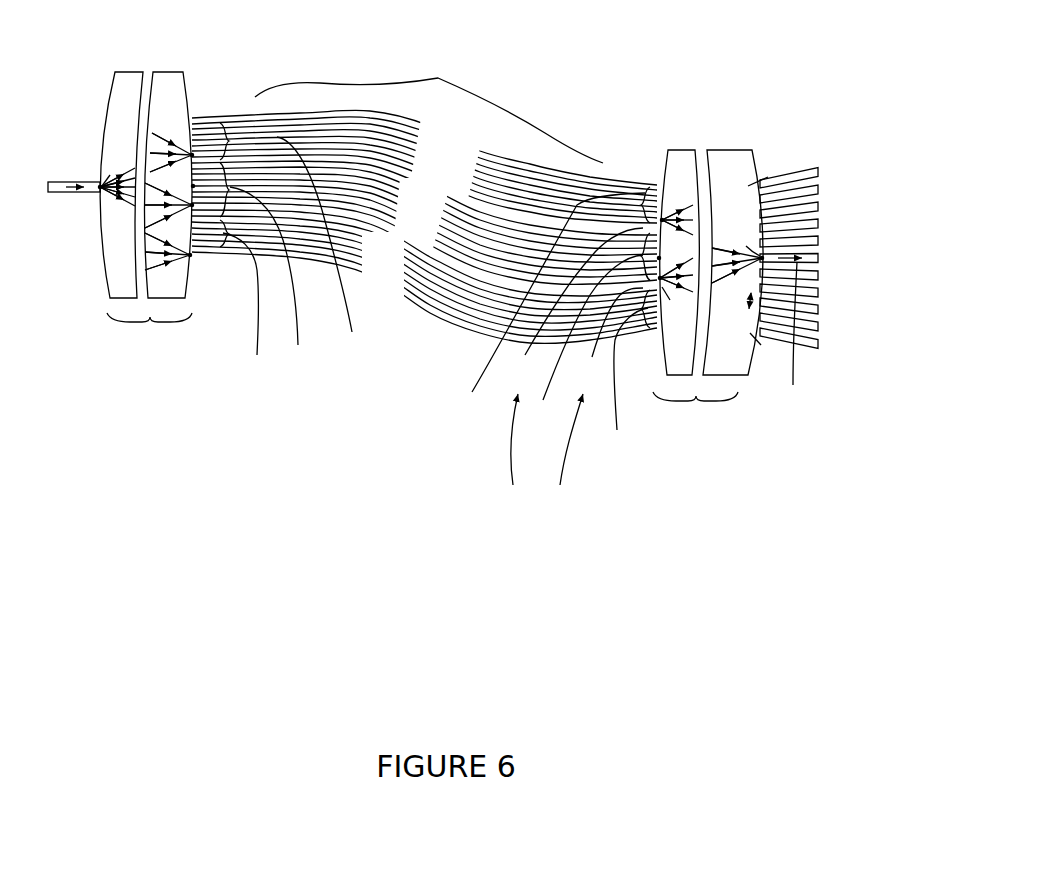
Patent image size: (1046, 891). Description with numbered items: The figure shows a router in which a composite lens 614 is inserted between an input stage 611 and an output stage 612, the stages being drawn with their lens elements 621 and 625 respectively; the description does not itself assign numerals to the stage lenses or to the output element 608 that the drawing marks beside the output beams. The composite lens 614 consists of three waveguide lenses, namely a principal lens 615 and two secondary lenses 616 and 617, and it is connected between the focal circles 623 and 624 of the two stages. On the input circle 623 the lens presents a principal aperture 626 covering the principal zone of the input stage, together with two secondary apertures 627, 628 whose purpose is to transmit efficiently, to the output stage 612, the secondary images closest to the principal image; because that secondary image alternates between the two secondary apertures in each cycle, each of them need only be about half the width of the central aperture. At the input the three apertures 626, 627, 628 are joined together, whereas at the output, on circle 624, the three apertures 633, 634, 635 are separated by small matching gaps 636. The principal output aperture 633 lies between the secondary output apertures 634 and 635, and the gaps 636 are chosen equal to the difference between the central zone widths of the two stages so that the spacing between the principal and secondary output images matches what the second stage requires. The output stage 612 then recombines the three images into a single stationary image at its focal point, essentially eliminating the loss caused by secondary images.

The input stage 611 is at (154, 206).
The first input lens 621 is at (105, 105).
The input focal circle 623 is at (192, 103).
The composite lens 614 is at (424, 269).
The secondary lens 616 is at (424, 166).
The principal lens 615 is at (424, 222).
The secondary lens 617 is at (424, 276).
The principal aperture 626 is at (275, 281).
The secondary aperture 627 is at (328, 247).
The secondary aperture 628 is at (244, 308).
The principal output aperture 633 is at (586, 342).
The secondary output aperture 634 is at (546, 307).
The secondary output aperture 635 is at (621, 381).
The matching gap 636 is at (572, 308).
The output stage 612 is at (747, 266).
The output focal circle 624 is at (662, 176).
The second output lens 625 is at (757, 153).
The output beam reference plane 608 is at (805, 335).